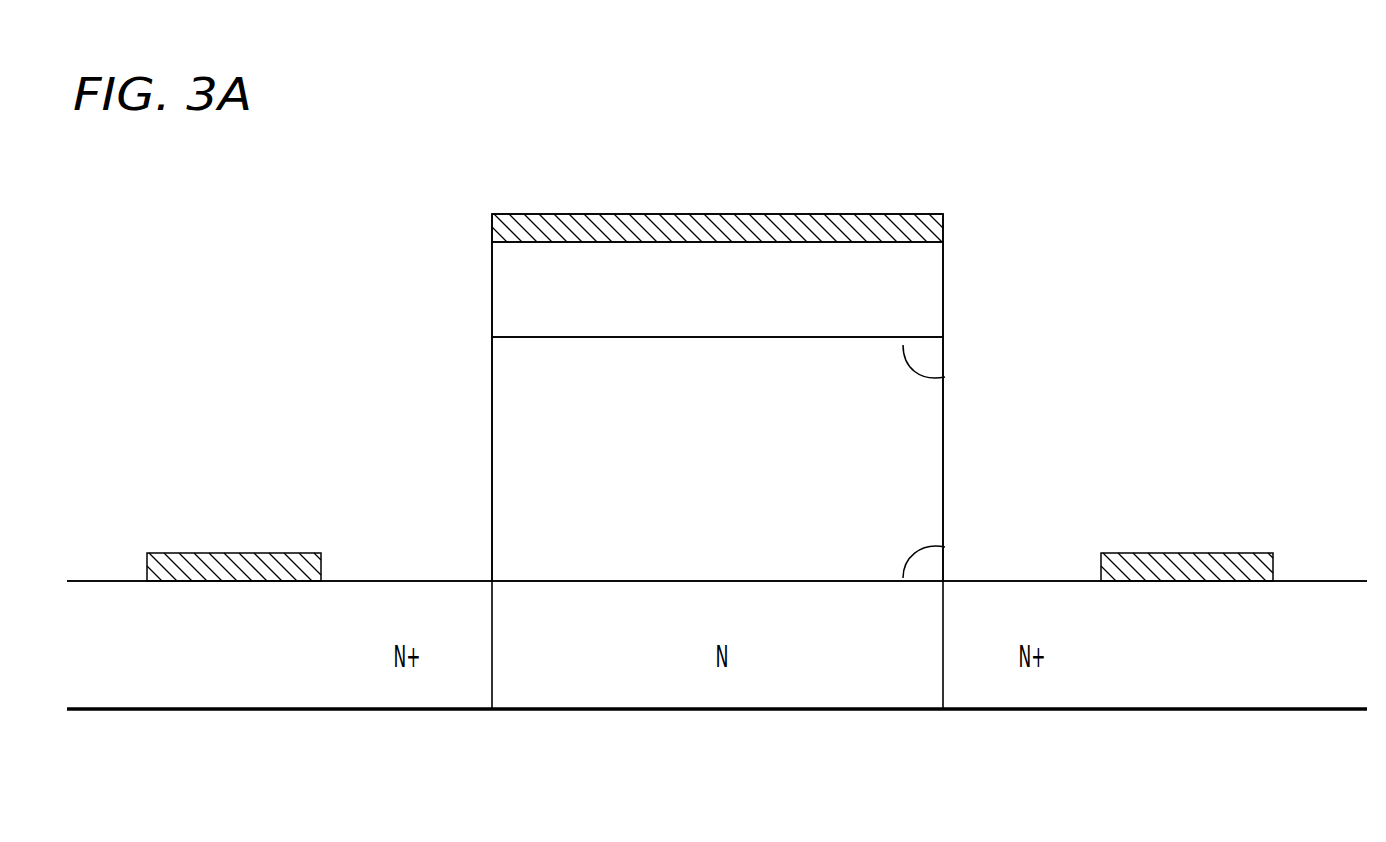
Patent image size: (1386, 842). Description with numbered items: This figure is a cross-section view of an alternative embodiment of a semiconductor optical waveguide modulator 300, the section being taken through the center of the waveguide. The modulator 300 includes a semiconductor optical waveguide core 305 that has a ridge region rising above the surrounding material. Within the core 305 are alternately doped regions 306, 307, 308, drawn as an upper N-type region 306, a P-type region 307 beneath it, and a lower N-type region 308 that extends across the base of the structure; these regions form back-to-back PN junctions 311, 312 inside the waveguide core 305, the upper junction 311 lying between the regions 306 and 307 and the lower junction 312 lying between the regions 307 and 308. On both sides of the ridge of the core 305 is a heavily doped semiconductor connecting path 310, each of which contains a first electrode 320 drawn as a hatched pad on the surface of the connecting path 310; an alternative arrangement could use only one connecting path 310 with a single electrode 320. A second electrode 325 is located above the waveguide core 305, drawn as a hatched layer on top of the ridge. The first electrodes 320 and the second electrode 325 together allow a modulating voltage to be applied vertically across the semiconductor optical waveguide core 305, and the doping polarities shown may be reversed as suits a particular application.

The semiconductor optical waveguide modulator 300 is at (1248, 158).
The semiconductor optical waveguide core 305 is at (948, 265).
The doped region 306 is at (510, 290).
The doped region 307 is at (510, 412).
The doped region 308 is at (828, 692).
The heavily doped semiconductor connecting path 310 is at (396, 578).
The PN junction 311 is at (945, 377).
The PN junction 312 is at (945, 547).
The first electrode 320 is at (207, 552).
The second electrode 325 is at (848, 213).